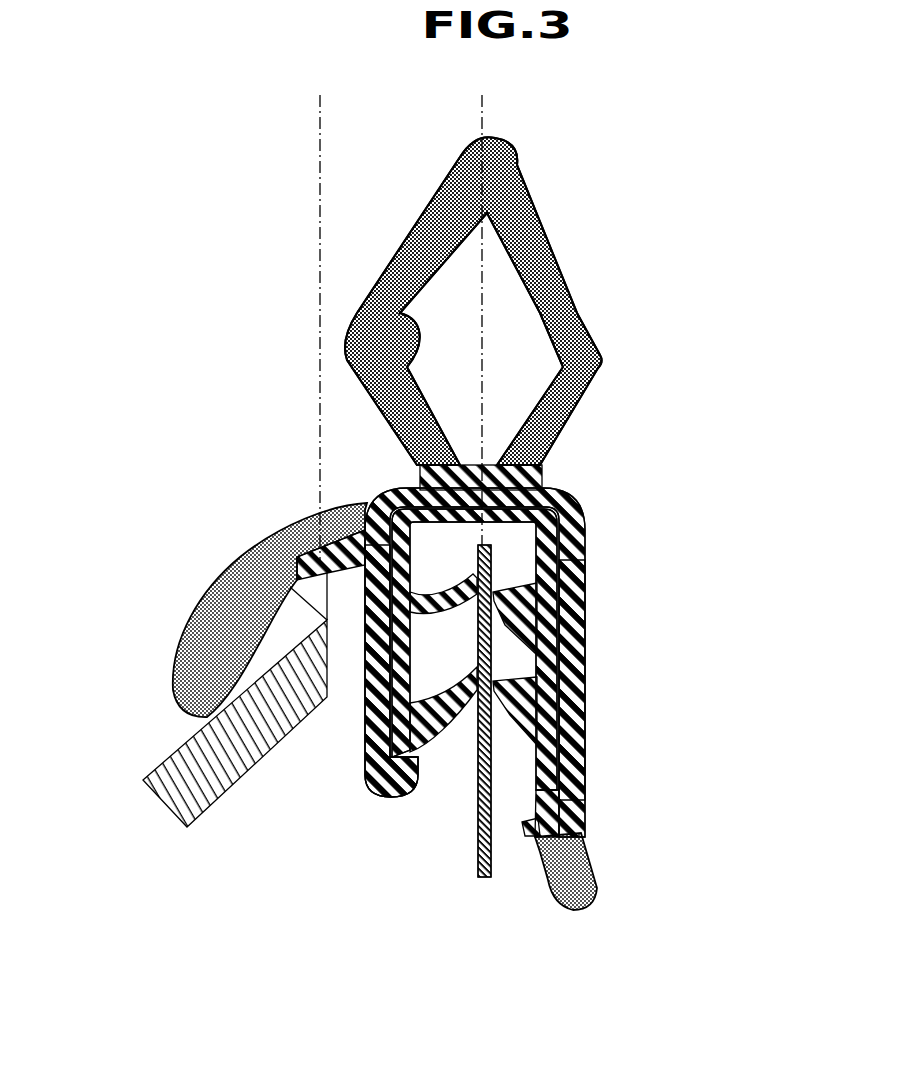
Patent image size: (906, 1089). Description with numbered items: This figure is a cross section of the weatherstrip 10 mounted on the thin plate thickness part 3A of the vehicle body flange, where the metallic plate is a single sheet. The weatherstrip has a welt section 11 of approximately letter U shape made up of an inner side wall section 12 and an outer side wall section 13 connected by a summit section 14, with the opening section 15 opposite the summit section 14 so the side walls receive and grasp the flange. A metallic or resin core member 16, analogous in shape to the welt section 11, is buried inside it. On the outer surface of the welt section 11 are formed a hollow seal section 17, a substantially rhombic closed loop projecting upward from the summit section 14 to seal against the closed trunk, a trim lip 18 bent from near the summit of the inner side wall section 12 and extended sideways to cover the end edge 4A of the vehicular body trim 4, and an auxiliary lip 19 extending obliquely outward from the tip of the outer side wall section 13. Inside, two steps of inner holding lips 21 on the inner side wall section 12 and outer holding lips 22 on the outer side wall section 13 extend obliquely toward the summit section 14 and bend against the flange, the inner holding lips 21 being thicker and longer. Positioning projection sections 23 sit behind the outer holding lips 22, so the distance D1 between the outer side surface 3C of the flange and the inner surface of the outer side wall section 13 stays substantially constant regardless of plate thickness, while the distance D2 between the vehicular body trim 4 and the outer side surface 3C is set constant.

The weatherstrip 10 is at (650, 343).
The welt section 11 is at (600, 615).
The inner side wall section 12 is at (372, 683).
The outer side wall section 13 is at (580, 797).
The summit section 14 is at (548, 478).
The opening section 15 is at (455, 780).
The core member 16 is at (570, 680).
The hollow seal section 17 is at (535, 237).
The trim lip 18 is at (213, 577).
The auxiliary lip 19 is at (593, 877).
The inner holding lip 21 is at (428, 598).
The outer holding lip 22 is at (542, 645).
The projection section 23 is at (580, 573).
The vehicular body trim 4 is at (150, 770).
The end edge 4A is at (263, 547).
The thin plate thickness part 3A is at (445, 882).
The outer side surface 3C is at (497, 863).
The distance D1 is at (493, 560).
The distance D2 is at (320, 108).